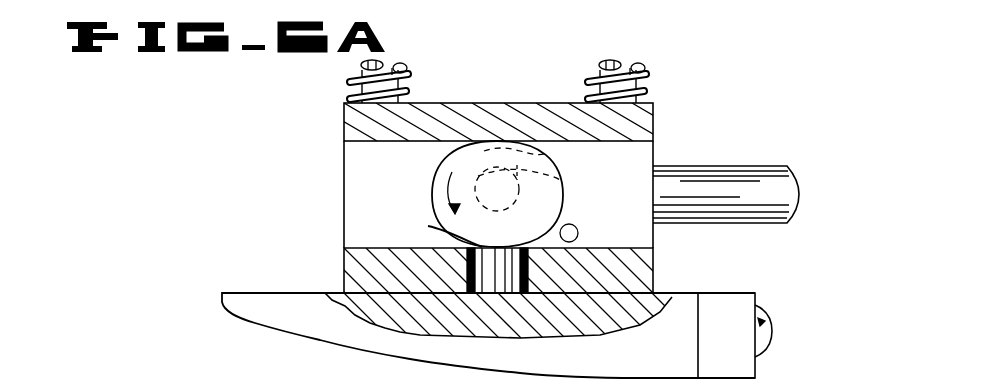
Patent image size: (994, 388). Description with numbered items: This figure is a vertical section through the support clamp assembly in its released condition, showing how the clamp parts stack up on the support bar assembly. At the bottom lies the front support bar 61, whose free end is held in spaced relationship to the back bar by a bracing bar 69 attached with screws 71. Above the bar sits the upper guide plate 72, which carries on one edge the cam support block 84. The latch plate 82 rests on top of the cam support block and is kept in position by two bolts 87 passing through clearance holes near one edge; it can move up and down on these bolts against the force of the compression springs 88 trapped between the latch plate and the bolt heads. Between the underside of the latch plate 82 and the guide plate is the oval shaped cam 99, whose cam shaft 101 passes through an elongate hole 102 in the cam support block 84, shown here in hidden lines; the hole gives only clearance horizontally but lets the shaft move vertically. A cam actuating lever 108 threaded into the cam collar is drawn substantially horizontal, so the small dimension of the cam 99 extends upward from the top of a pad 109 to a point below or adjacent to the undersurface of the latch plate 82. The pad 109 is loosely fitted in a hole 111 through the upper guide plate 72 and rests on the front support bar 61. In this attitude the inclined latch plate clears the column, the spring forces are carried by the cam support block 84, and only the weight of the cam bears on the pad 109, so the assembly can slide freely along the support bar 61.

The front support bar 61 is at (270, 298).
The bracing bar 69 is at (730, 295).
The screws 71 is at (764, 320).
The upper guide plate 72 is at (648, 266).
The latch plate 82 is at (345, 124).
The cam support block 84 is at (350, 181).
The bolts 87 is at (402, 69).
The compression springs 88 is at (350, 76).
The oval shaped cam 99 is at (560, 212).
The cam shaft 101 is at (548, 178).
The elongate hole 102 is at (540, 153).
The cam actuating lever 108 is at (786, 165).
The pad 109 is at (497, 295).
The hole 111 is at (447, 232).